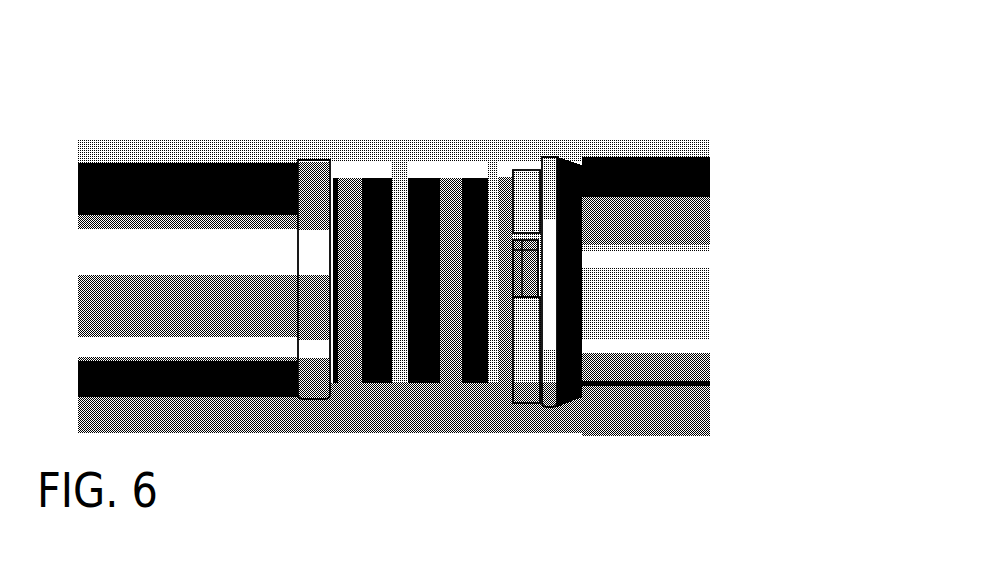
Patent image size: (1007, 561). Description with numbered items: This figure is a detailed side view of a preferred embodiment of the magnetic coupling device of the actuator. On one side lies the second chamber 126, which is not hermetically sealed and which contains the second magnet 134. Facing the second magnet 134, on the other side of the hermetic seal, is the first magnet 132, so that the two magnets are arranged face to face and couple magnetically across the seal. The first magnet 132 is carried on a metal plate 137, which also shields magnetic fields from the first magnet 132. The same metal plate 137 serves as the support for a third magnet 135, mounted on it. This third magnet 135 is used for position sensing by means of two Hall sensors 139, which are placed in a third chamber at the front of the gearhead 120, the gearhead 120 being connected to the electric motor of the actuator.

The second chamber 126 is at (148, 212).
The second magnet 134 is at (365, 178).
The first magnet 132 is at (415, 178).
The metal plate 137 is at (462, 178).
The Hall sensors 139 is at (517, 266).
The third magnet 135 is at (473, 390).
The gearhead 120 is at (622, 342).